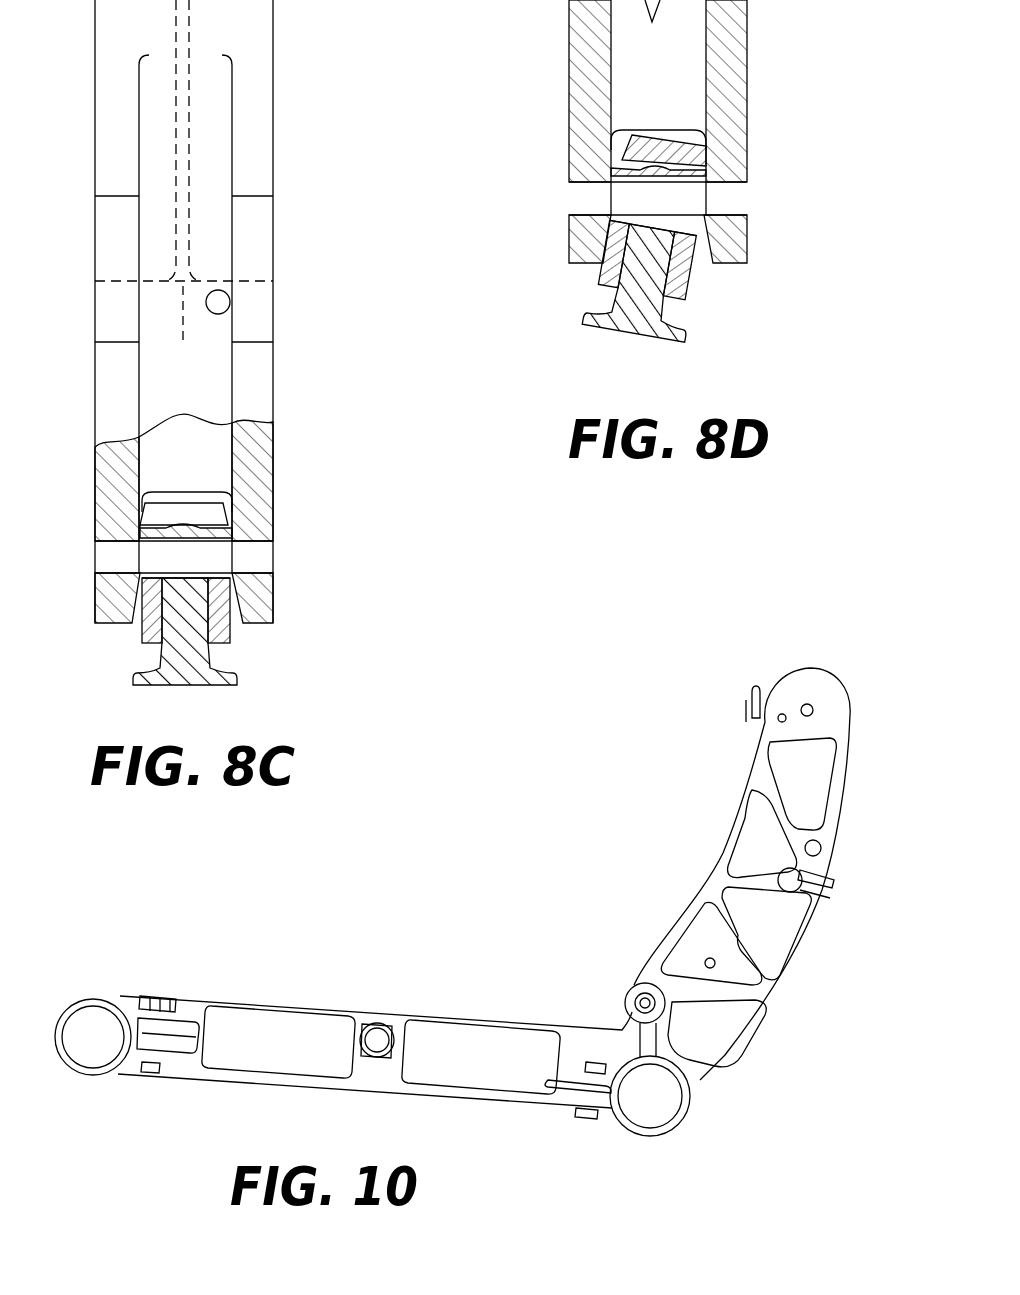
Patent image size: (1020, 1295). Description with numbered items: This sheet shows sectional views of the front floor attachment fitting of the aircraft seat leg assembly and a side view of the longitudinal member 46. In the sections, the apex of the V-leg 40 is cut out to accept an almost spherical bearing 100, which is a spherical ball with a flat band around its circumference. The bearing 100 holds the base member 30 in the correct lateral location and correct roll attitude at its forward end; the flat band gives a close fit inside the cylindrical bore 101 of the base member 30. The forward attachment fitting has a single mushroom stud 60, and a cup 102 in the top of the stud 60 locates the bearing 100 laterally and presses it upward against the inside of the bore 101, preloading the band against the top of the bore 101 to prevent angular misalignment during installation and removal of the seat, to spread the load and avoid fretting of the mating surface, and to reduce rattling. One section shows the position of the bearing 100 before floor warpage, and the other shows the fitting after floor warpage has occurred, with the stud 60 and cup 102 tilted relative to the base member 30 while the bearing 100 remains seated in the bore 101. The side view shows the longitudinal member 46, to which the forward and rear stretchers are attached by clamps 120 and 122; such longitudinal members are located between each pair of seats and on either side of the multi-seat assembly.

In FIG. 8C, the base member 30 is at (230, 630).
In FIG. 8D, the base member 30 is at (697, 273).
In FIG. 8C, the V-leg 40 is at (280, 450).
In FIG. 8D, the V-leg 40 is at (747, 98).
In FIG. 10, the longitudinal member 46 is at (327, 982).
In FIG. 8C, the mushroom stud 60 is at (240, 680).
In FIG. 8D, the mushroom stud 60 is at (690, 328).
In FIG. 8C, the almost spherical bearing 100 is at (213, 543).
In FIG. 8D, the almost spherical bearing 100 is at (650, 183).
In FIG. 8C, the bore 101 is at (220, 532).
In FIG. 8D, the bore 101 is at (627, 163).
In FIG. 8C, the cup 102 is at (150, 632).
In FIG. 8D, the cup 102 is at (622, 290).
In FIG. 10, the clamp 120 is at (83, 1075).
In FIG. 10, the clamp 122 is at (634, 1137).